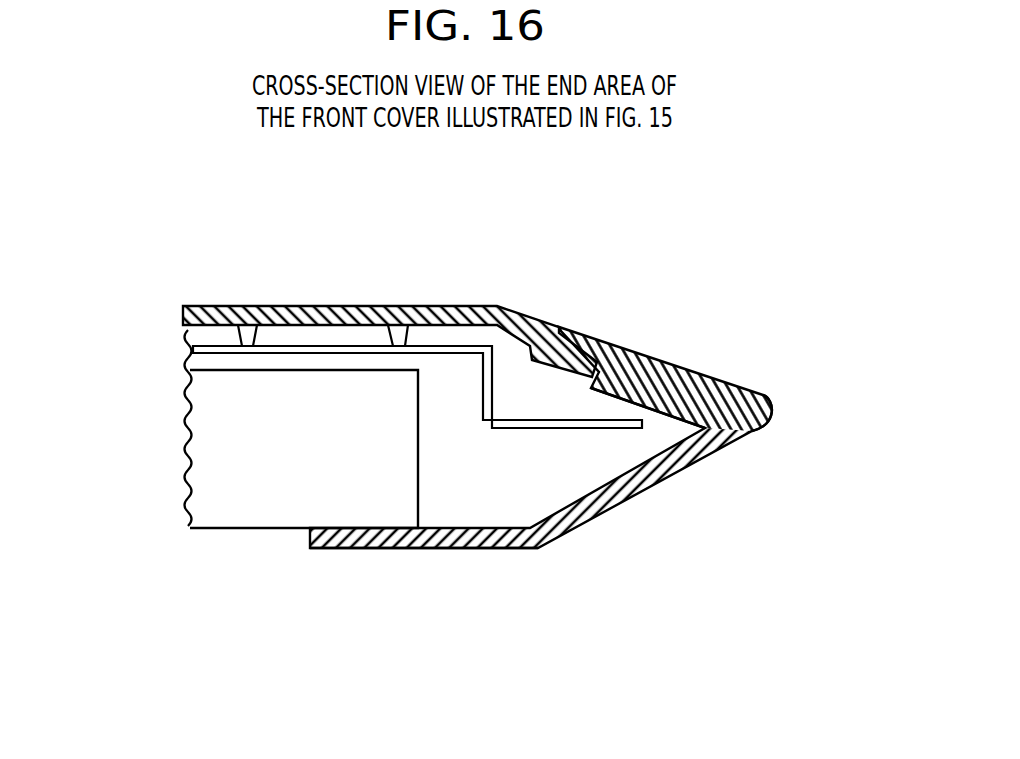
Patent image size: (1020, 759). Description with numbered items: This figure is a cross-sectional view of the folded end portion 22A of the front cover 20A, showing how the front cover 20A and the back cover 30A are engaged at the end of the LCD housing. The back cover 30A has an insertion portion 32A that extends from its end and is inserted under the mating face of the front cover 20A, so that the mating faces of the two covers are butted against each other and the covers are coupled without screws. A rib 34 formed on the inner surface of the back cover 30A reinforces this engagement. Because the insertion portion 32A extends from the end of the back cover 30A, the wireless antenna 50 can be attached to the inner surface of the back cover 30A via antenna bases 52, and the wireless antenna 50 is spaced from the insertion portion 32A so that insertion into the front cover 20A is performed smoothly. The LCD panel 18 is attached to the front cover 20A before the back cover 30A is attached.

The back cover 30A is at (370, 306).
The insertion portion 32A is at (615, 367).
The end portion 22A is at (775, 410).
The rib 34 is at (607, 393).
The front cover 20A is at (368, 548).
The antenna base 52 is at (240, 338).
The LCD panel 18 is at (203, 393).
The wireless antenna 50 is at (493, 437).